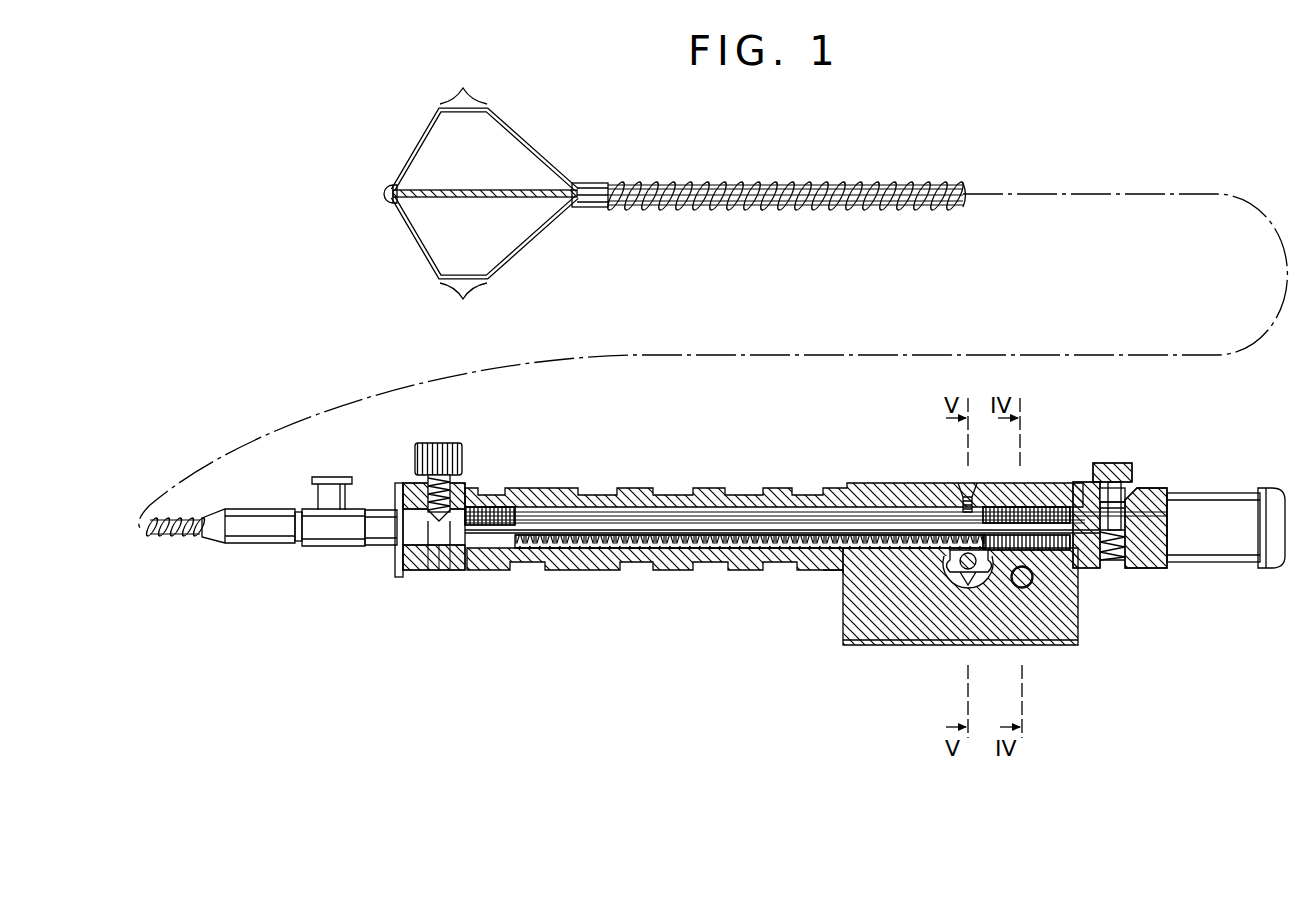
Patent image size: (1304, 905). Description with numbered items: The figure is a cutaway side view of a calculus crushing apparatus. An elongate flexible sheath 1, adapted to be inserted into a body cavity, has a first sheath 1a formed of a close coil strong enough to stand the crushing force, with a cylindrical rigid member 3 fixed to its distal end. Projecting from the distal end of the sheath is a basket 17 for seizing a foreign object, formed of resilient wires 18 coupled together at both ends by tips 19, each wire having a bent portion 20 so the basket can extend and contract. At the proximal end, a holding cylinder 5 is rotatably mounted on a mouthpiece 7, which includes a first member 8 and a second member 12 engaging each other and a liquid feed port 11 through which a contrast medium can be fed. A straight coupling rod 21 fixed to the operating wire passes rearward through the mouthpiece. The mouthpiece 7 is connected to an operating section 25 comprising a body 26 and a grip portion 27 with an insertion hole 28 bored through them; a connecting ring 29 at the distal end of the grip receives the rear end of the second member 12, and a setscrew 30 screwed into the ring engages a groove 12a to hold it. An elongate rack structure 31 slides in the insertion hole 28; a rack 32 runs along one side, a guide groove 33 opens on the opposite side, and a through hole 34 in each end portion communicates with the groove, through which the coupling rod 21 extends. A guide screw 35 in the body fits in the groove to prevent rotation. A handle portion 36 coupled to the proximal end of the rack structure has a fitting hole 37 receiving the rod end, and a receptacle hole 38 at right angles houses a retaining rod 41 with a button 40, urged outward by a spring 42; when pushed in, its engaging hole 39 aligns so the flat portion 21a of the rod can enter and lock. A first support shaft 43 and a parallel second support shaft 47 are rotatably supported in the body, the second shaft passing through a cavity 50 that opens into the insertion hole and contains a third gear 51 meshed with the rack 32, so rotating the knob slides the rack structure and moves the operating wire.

The sheath 1 is at (885, 150).
The first sheath 1a is at (757, 208).
The cylindrical rigid member 3 is at (596, 206).
The holding cylinder 5 is at (245, 545).
The mouthpiece 7 is at (317, 511).
The first member 8 is at (345, 546).
The liquid feed port 11 is at (330, 477).
The second member 12 is at (378, 511).
The groove 12a is at (437, 570).
The basket 17 is at (457, 194).
The resilient wires 18 is at (535, 153).
The tips 19 is at (388, 186).
The bent portions 20 is at (463, 194).
The coupling rod 21 is at (658, 518).
The flat portion 21a is at (1168, 513).
The operating section 25 is at (782, 570).
The body 26 is at (944, 619).
The grip portion 27 is at (712, 571).
The insertion hole 28 is at (590, 495).
The connecting ring 29 is at (462, 570).
The setscrew 30 is at (452, 443).
The rack structure 31 is at (848, 530).
The rack 32 is at (598, 549).
The guide groove 33 is at (745, 508).
The through hole 34 is at (483, 507).
The guide screw 35 is at (970, 497).
The handle portion 36 is at (1215, 563).
The fitting hole 37 is at (1090, 560).
The receptacle hole 38 is at (1126, 558).
The engaging hole 39 is at (1087, 487).
The button 40 is at (1120, 463).
The retaining rod 41 is at (1147, 500).
The spring 42 is at (1110, 562).
The first support shaft 43 is at (1025, 590).
The second support shaft 47 is at (862, 571).
The cavity 50 is at (978, 584).
The third gear 51 is at (964, 575).